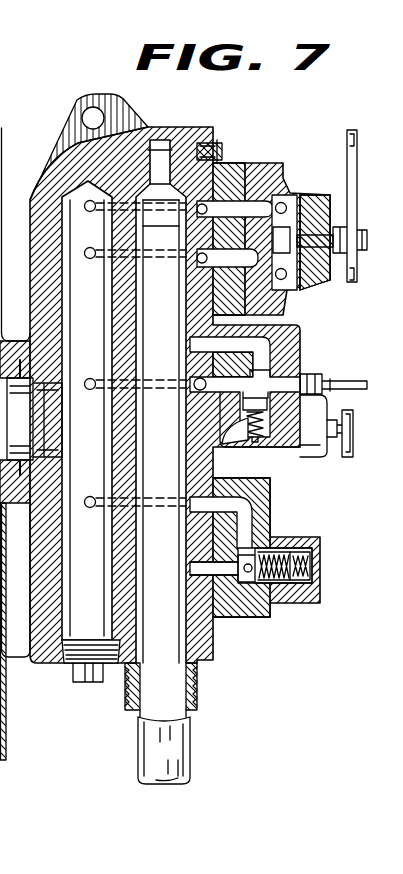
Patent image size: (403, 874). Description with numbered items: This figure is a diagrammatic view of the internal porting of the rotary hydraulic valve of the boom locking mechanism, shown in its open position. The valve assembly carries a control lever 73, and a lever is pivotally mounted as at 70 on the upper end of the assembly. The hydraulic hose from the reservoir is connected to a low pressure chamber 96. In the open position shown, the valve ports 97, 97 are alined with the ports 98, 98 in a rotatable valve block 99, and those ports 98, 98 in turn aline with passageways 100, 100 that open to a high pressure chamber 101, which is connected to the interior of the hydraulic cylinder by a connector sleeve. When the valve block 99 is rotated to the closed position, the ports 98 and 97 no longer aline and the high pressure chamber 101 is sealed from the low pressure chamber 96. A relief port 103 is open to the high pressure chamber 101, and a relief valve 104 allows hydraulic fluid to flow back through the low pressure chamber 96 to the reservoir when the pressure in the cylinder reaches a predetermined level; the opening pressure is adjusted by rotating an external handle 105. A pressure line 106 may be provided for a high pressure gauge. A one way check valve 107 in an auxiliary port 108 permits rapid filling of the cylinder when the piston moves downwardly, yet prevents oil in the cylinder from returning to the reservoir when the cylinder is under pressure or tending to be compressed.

The pivot 70 is at (103, 114).
The control lever 73 is at (353, 178).
The low pressure chamber 96 is at (213, 470).
The valve ports 97 is at (186, 279).
The ports 98 is at (262, 272).
The rotatable valve block 99 is at (275, 204).
The passageways 100 is at (98, 270).
The high pressure chamber 101 is at (62, 650).
The relief port 103 is at (95, 379).
The relief valve 104 is at (291, 383).
The external handle 105 is at (348, 458).
The pressure line 106 is at (342, 380).
The one way check valve 107 is at (253, 557).
The auxiliary port 108 is at (203, 562).